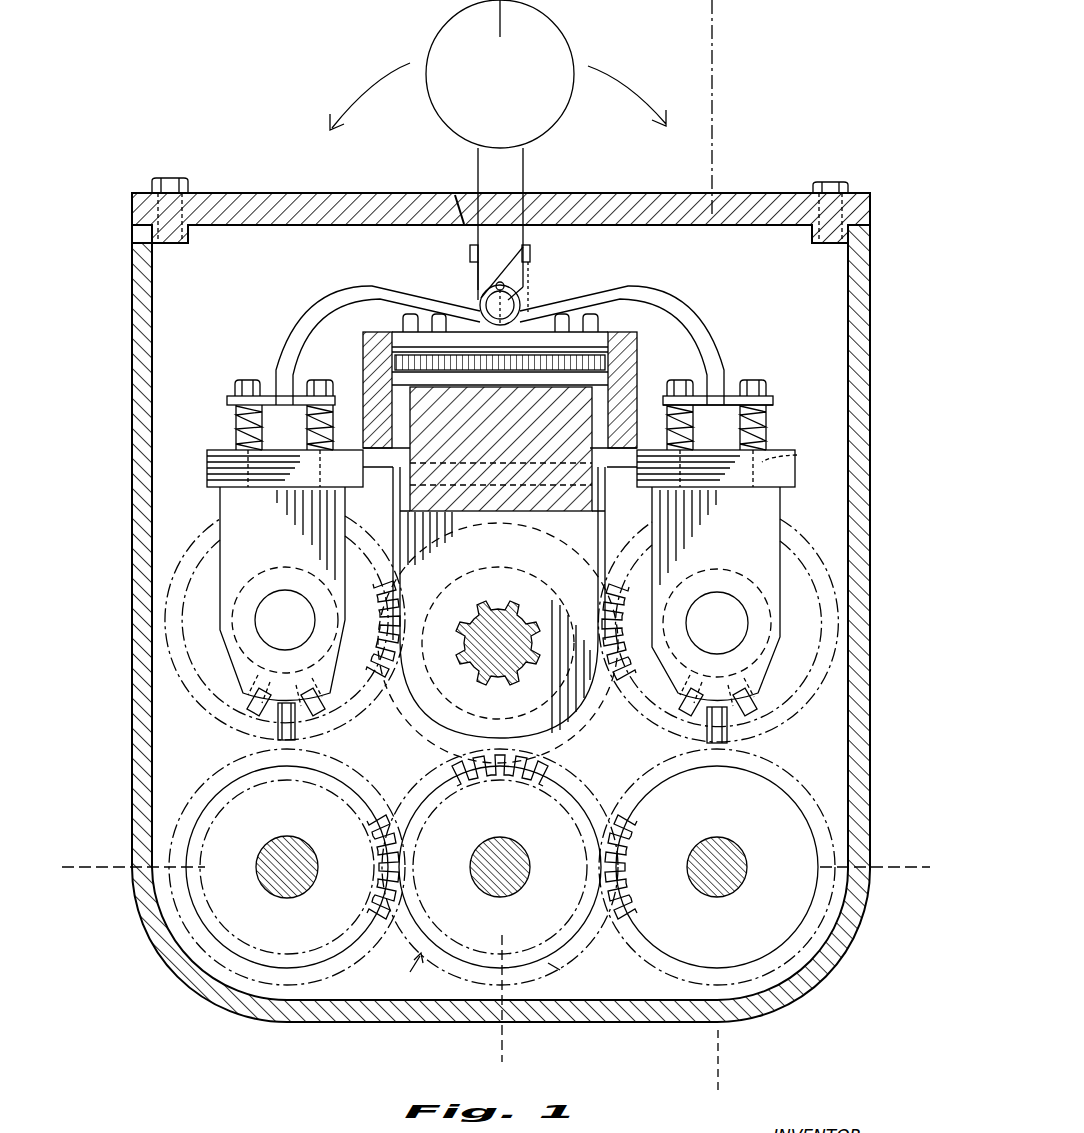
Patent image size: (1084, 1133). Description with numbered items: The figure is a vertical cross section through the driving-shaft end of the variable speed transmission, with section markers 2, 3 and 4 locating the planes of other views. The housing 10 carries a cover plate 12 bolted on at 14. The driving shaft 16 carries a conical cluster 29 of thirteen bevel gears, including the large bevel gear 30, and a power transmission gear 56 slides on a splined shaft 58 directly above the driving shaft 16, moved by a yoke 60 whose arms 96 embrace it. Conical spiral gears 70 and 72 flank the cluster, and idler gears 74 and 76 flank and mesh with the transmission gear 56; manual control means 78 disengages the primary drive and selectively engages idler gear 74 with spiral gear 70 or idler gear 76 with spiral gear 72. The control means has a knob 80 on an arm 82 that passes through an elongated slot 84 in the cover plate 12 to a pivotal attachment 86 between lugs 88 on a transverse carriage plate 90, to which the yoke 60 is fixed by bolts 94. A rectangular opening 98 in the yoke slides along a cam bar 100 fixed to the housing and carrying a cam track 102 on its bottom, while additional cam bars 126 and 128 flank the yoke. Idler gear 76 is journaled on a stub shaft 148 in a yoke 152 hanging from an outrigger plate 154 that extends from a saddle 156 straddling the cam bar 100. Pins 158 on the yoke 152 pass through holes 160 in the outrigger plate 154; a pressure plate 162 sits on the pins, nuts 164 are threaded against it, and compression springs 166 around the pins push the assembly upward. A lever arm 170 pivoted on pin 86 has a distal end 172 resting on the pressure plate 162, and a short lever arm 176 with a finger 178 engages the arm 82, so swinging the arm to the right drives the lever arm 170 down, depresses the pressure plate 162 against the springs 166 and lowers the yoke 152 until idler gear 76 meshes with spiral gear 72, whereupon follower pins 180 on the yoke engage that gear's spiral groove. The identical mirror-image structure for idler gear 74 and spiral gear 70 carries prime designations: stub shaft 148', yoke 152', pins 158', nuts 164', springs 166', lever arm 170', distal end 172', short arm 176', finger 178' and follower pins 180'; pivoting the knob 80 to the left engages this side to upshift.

The section line 2- 2 is at (535, 1043).
The section line 3- 3 is at (95, 884).
The section line 4- 4 is at (690, 33).
The housing 10 is at (122, 266).
The cover plate 12 is at (258, 197).
The bolts 14 is at (170, 180).
The driving shaft 16 is at (502, 840).
The conical cluster 29 is at (410, 972).
The large bevel gear 30 is at (550, 968).
The power transmission gear 56 is at (582, 732).
The splined shaft 58 is at (480, 680).
The yoke 60 is at (529, 559).
The conical spiral gear 70 is at (364, 954).
The conical spiral gear 72 is at (642, 955).
The idler gear 74 is at (197, 702).
The idler gear 76 is at (785, 716).
The manual control means 78 is at (561, 276).
The knob 80 is at (500, 84).
The arm 82 is at (510, 176).
The elongated slot 84 is at (458, 194).
The pivot pin 86 is at (491, 299).
The lugs 88 is at (486, 310).
The transverse carriage plate 90 is at (518, 349).
The bolts 94 is at (402, 322).
The arms 96 is at (428, 712).
The rectangular through opening 98 is at (500, 380).
The cam bar 100 is at (550, 453).
The cam track 102 is at (496, 512).
The cam bar 126 is at (362, 386).
The cam bar 128 is at (638, 386).
The stub shaft 148 is at (717, 623).
The stub shaft 148' is at (285, 620).
The yoke 152 is at (716, 601).
The yoke 152' is at (282, 601).
The outrigger plate 154 is at (787, 472).
The saddle 156 is at (542, 370).
The pins 158 is at (779, 427).
The pins 158' is at (261, 427).
The holes 160 is at (797, 455).
The pressure plate 162 is at (773, 403).
The nuts 164 is at (741, 388).
The nuts 164' is at (261, 388).
The compression springs 166 is at (745, 427).
The compression springs 166' is at (225, 426).
The lever arm 170 is at (622, 328).
The lever arm 170' is at (378, 328).
The distal end portion 172 is at (738, 377).
The distal end portion 172' is at (271, 372).
The short lever arm 176 is at (529, 279).
The short lever arm 176' is at (441, 274).
The finger 178 is at (551, 245).
The finger 178' is at (445, 245).
The follower pin 180 is at (755, 729).
The follower pin 180' is at (323, 727).